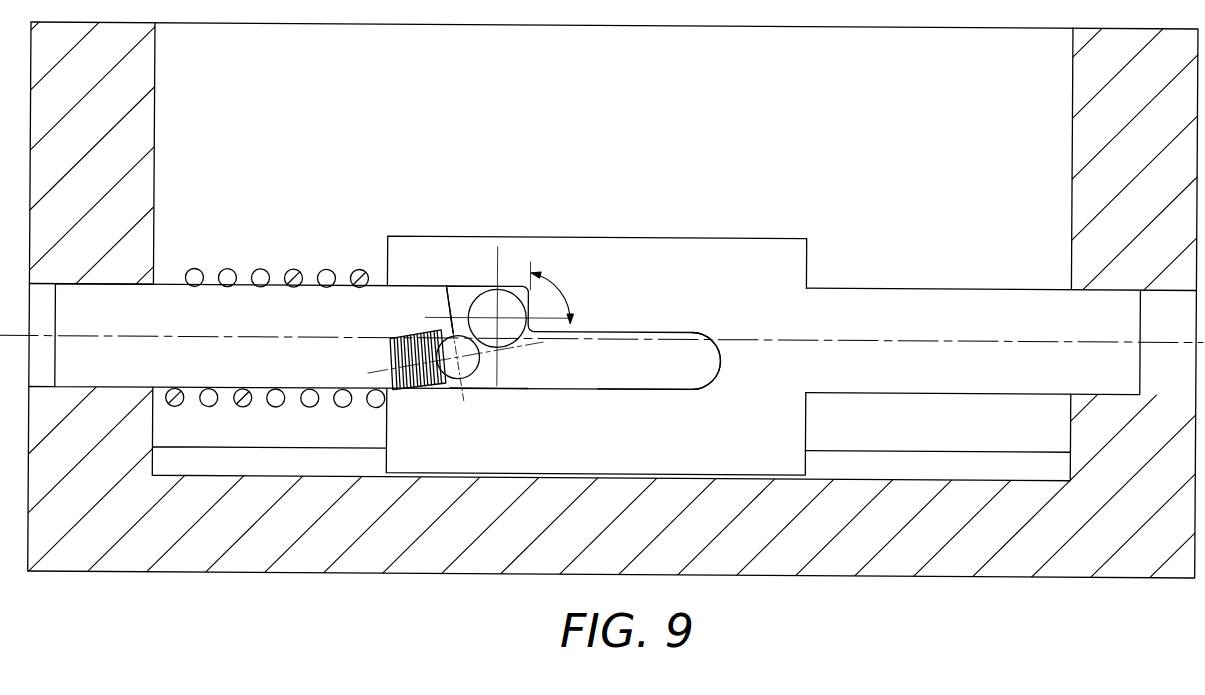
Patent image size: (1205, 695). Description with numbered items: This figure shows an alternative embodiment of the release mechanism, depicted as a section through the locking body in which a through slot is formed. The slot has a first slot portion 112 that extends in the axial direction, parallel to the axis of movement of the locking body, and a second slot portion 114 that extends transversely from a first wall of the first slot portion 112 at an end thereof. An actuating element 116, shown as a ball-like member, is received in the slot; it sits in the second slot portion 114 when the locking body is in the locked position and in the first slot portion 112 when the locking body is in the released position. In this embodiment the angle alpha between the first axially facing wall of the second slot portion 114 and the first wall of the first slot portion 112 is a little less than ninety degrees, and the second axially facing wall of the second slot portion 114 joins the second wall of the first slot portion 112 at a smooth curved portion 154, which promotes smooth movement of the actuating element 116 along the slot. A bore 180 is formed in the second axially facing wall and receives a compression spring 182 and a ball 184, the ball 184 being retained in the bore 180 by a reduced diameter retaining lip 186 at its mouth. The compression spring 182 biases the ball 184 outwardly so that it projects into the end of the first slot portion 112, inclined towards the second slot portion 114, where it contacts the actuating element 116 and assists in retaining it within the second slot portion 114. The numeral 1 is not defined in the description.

The locking device / rod 1 is at (643, 327).
The first slot portion 112 is at (662, 375).
The second slot portion 114 is at (477, 285).
The actuating element 116 is at (508, 297).
The smooth curved portion 154 is at (493, 384).
The bore 180 is at (400, 340).
The compression spring 182 is at (433, 381).
The ball 184 is at (452, 327).
The retaining lip 186 is at (455, 329).